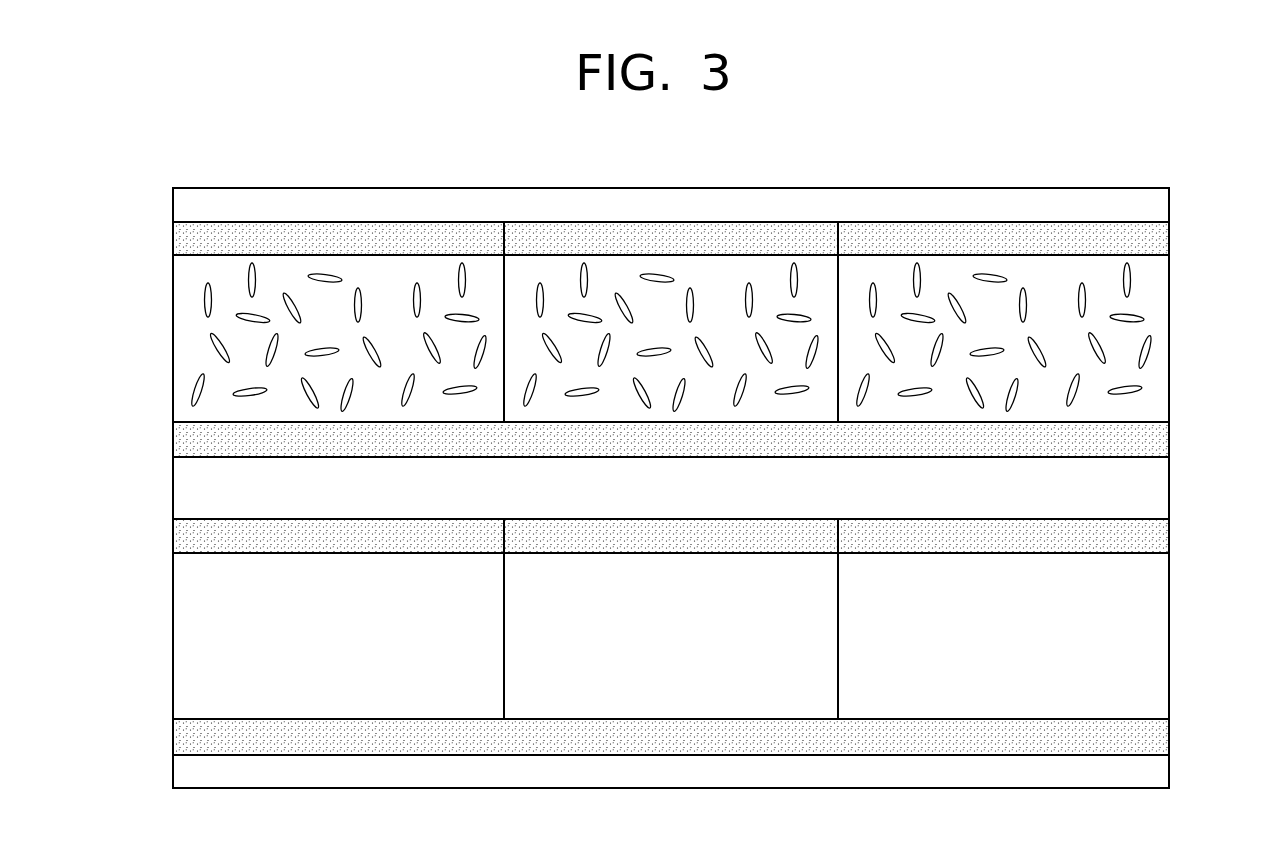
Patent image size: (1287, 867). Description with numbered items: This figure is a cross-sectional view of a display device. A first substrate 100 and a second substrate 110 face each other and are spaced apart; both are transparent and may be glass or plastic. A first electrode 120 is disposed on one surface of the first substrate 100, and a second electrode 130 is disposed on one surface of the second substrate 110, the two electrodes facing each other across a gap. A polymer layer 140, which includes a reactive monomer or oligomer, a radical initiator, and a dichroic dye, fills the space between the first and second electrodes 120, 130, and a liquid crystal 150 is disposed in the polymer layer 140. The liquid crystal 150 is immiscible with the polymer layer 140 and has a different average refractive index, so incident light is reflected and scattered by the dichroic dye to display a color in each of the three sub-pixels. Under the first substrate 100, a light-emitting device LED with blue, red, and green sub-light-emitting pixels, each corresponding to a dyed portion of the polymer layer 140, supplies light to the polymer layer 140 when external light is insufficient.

The second substrate 110 is at (1155, 208).
The second electrode 130 is at (1155, 243).
The polymer layer 140 is at (1155, 279).
The liquid crystal 150 is at (1155, 347).
The first electrode 120 is at (1155, 440).
The first substrate 100 is at (1155, 499).
The light-emitting device LED is at (1181, 553).